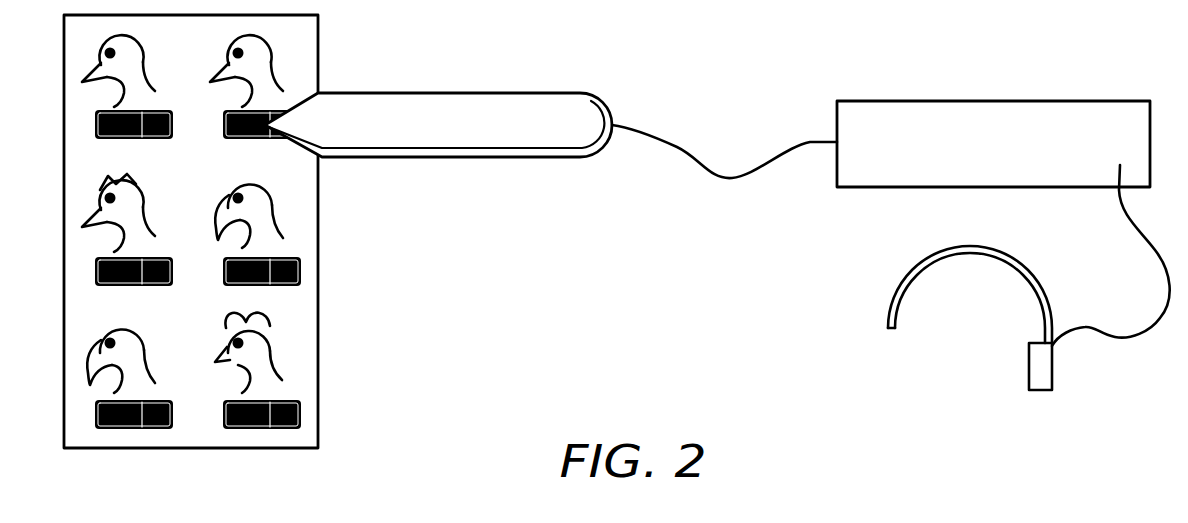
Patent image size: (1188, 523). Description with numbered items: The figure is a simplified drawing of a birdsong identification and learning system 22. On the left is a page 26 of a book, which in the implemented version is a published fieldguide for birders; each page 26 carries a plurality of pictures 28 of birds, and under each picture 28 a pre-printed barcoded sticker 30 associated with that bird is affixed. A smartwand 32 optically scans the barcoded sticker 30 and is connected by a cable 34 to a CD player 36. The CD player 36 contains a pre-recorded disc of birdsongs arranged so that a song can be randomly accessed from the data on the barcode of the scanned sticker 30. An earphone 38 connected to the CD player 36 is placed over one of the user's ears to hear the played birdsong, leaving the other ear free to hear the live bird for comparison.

The birdsong identification and learning system 22 is at (630, 256).
The page 26 is at (307, 230).
The picture 28 is at (286, 342).
The pre-printed barcoded sticker 30 is at (299, 413).
The smartwand 32 is at (460, 102).
The cable 34 is at (677, 147).
The CD player 36 is at (1025, 110).
The earphone 38 is at (1068, 367).